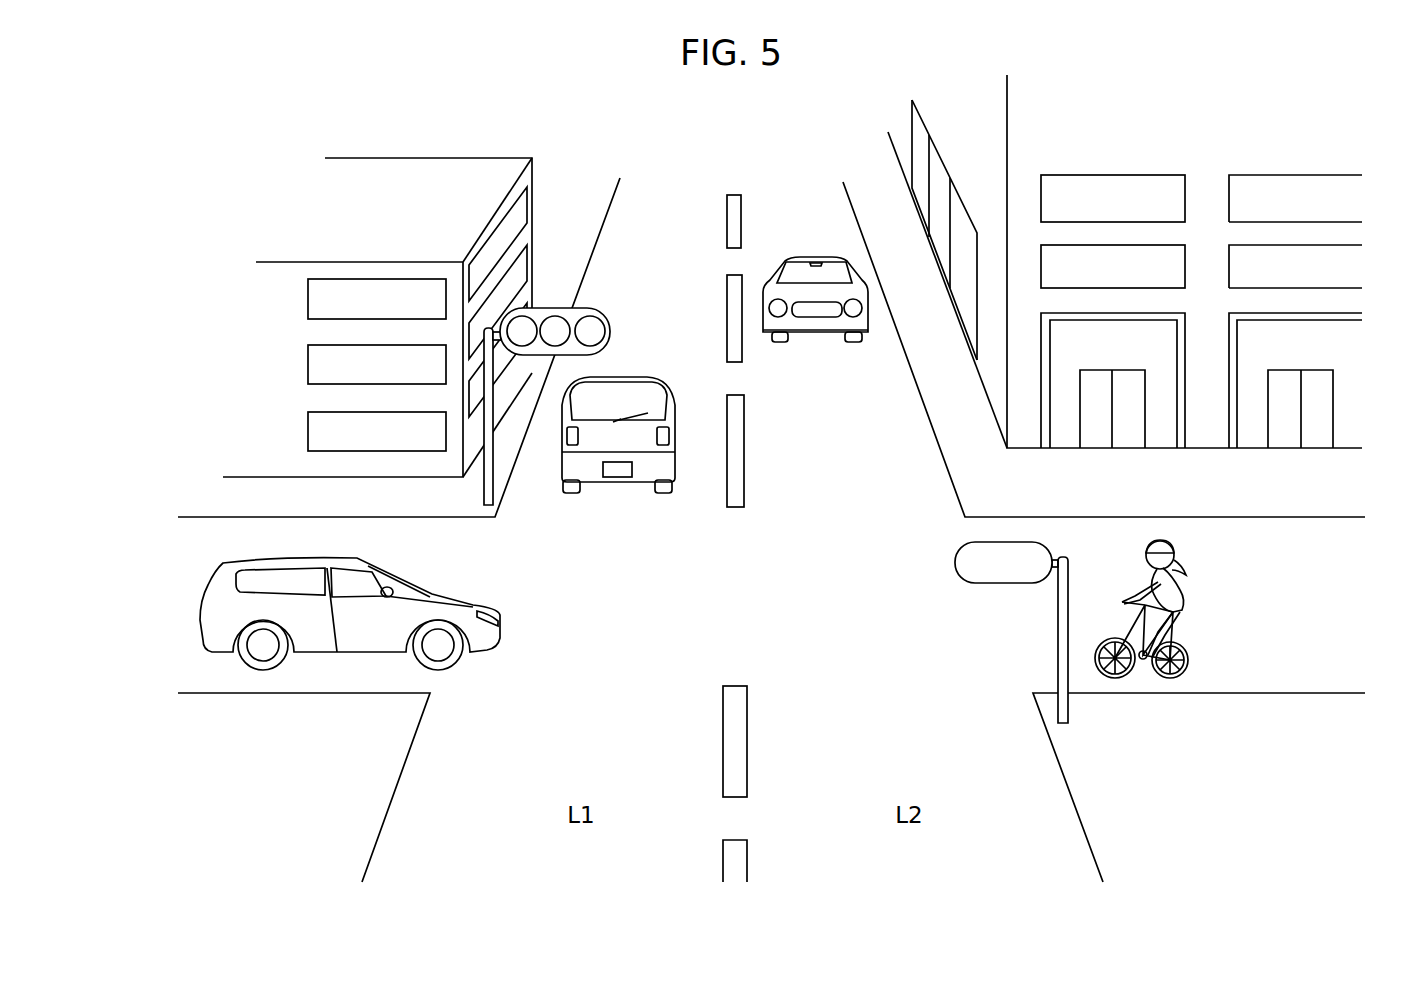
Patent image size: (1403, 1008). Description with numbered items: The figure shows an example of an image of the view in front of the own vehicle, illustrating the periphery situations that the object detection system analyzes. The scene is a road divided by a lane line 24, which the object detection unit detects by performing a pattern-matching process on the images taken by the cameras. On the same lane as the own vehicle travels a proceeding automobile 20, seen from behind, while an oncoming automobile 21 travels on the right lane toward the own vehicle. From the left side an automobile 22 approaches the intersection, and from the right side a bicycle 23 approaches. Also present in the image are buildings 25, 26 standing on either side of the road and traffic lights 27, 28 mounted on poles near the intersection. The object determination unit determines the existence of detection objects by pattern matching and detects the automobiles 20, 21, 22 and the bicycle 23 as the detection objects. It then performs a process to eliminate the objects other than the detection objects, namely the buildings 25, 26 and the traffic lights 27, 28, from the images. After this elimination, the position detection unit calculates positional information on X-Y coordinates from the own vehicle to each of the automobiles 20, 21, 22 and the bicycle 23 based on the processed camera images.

The proceeding automobile 20 is at (637, 377).
The oncoming automobile 21 is at (815, 253).
The automobile coming from the left side 22 is at (212, 583).
The bicycle 23 is at (1180, 593).
The lane line 24 is at (732, 192).
The building 25 is at (445, 158).
The building 26 is at (1005, 132).
The traffic light 27 is at (583, 308).
The traffic light 28 is at (955, 556).